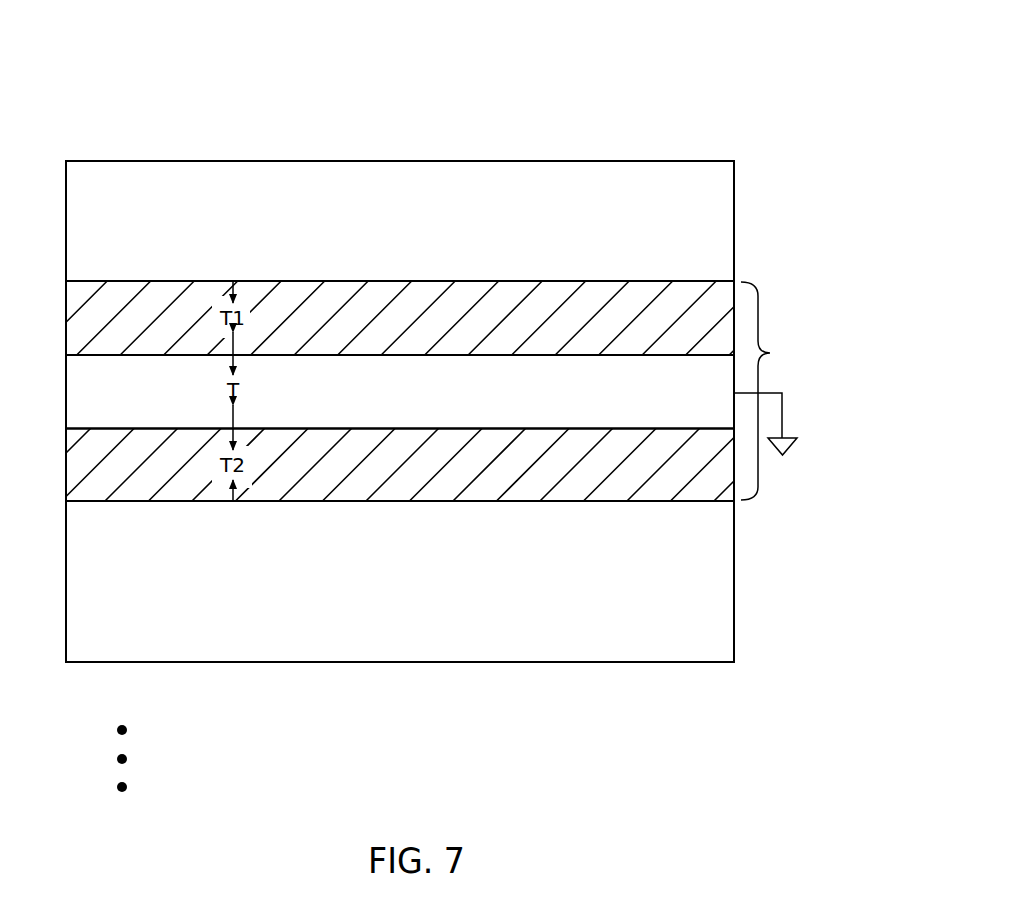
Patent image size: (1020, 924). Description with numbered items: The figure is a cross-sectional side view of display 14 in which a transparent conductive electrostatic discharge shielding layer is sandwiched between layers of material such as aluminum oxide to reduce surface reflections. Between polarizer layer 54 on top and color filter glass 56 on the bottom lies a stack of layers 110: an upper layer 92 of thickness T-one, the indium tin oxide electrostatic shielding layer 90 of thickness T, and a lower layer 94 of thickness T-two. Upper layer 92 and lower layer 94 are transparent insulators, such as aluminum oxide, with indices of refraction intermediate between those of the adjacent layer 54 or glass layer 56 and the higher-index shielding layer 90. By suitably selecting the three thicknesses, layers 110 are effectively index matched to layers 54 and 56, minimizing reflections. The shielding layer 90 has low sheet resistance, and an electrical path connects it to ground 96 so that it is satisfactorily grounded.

The display 14 is at (630, 68).
The polarizer layer 54 is at (70, 222).
The upper layer 92 is at (70, 318).
The indium tin oxide electrostatic shielding layer 90 is at (70, 390).
The lower layer 94 is at (70, 462).
The color filter glass 56 is at (70, 582).
The layers 110 is at (777, 391).
The ground 96 is at (790, 447).